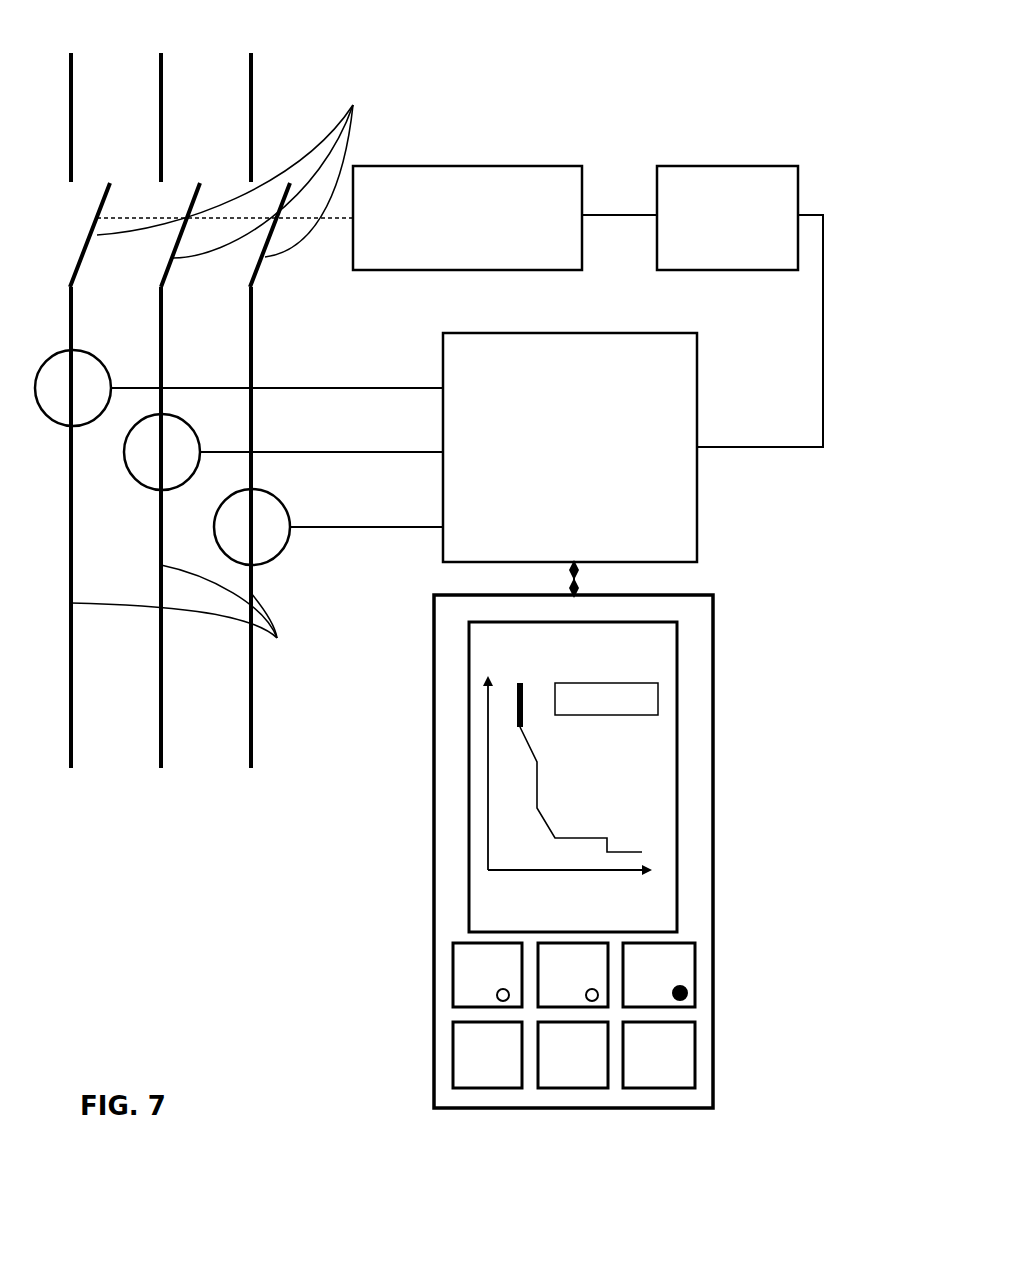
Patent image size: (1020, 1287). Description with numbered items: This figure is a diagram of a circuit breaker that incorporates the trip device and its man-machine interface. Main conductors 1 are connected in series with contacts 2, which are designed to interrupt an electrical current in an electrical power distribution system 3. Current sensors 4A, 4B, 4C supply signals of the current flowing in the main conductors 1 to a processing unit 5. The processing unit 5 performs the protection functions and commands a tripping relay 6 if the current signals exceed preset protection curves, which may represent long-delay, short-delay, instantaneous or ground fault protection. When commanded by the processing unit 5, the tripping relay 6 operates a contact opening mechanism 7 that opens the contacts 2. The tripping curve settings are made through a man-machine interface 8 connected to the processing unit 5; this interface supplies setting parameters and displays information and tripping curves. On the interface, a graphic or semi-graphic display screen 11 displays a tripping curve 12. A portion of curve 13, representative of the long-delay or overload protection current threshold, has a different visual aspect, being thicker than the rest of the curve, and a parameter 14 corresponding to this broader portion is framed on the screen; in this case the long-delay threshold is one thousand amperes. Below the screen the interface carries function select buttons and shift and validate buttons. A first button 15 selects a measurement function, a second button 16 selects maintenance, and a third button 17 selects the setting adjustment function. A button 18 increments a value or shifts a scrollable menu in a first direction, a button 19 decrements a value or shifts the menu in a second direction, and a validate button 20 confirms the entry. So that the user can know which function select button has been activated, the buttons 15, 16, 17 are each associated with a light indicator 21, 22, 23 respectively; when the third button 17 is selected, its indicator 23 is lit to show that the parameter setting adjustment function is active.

The main conductors 1 is at (180, 630).
The contacts 2 is at (230, 155).
The electrical power distribution system 3 is at (176, 808).
The current sensor 4A is at (123, 338).
The current sensor 4B is at (193, 427).
The current sensor 4C is at (281, 501).
The processing unit 5 is at (697, 337).
The tripping relay 6 is at (682, 166).
The contact opening mechanism 7 is at (443, 166).
The man-machine interface 8 is at (714, 907).
The graphic or semi-graphic display screen 11 is at (677, 787).
The tripping curve 12 is at (524, 803).
The portion of curve 13 is at (516, 723).
The parameter 14 is at (643, 690).
The first button 15 is at (465, 963).
The second button 16 is at (563, 988).
The third button 17 is at (695, 970).
The incrementing button 18 is at (490, 1083).
The decrementing button 19 is at (577, 1080).
The validate button 20 is at (667, 1080).
The light indicator 21 is at (497, 995).
The light indicator 22 is at (595, 1005).
The light indicator 23 is at (687, 993).